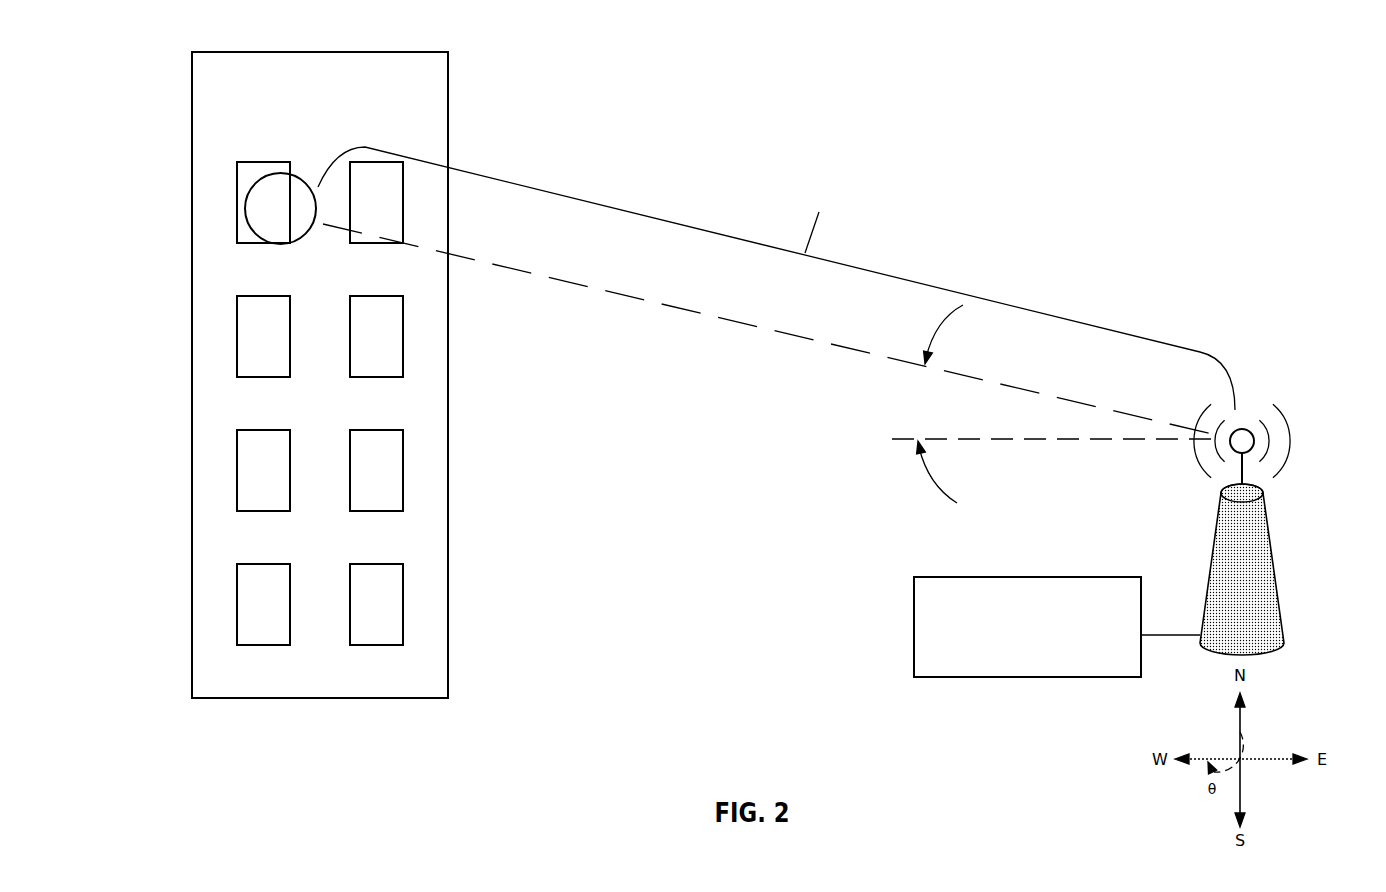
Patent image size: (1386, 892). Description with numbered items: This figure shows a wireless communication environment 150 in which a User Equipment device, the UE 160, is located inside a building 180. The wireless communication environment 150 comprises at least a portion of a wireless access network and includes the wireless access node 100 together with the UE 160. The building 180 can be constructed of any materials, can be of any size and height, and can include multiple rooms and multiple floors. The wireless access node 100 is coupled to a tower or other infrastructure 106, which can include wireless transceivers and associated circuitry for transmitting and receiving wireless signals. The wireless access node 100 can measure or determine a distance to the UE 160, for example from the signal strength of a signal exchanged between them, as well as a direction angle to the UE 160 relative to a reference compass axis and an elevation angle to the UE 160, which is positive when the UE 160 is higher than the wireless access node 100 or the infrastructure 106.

The wireless access node 100 is at (1057, 627).
The tower or other infrastructure 106 is at (1213, 535).
The wireless communication environment 150 is at (1016, 155).
The User Equipment device 160 is at (300, 177).
The building 180 is at (320, 698).